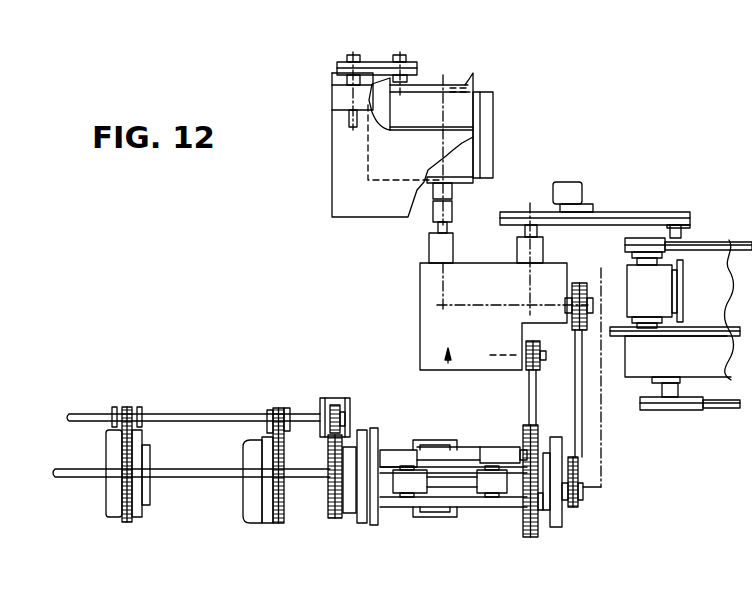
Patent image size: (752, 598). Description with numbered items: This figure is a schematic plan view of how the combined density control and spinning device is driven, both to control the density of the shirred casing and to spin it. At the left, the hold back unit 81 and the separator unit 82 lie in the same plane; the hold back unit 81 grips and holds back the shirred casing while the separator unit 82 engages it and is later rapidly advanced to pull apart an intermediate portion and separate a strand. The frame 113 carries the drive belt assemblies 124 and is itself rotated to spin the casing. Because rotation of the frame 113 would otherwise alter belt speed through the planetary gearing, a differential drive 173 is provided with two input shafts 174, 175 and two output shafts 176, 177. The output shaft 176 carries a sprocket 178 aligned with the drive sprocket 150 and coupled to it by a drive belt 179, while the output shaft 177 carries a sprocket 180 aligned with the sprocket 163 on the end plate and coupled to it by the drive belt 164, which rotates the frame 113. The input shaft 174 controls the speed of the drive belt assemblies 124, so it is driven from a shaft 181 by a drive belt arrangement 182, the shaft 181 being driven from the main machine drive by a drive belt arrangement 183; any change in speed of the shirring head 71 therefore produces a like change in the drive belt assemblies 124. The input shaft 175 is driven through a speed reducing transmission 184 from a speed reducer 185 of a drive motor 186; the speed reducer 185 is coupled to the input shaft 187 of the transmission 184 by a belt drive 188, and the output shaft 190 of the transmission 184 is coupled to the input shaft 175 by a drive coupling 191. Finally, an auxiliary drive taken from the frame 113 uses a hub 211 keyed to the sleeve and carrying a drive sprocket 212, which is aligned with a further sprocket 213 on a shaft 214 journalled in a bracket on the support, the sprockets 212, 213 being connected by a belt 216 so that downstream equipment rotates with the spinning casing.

The shirring head 71 is at (655, 340).
The hold back unit 81 is at (255, 529).
The separator unit 82 is at (131, 532).
The frame 113 is at (392, 517).
The drive belt assembly 124 is at (463, 488).
The drive sprocket 150 is at (583, 507).
The sprocket 163 is at (528, 539).
The drive belt 164 is at (527, 403).
The differential drive 173 is at (447, 364).
The input shaft 174 is at (537, 230).
The input shaft 175 is at (430, 230).
The output shaft 176 is at (593, 297).
The output shaft 177 is at (547, 355).
The sprocket 178 is at (579, 283).
The drive belt 179 is at (583, 435).
The sprocket 180 is at (522, 377).
The shaft 181 is at (683, 235).
The drive belt arrangement 182 is at (632, 212).
The drive belt arrangement 183 is at (725, 407).
The speed reducing transmission 184 is at (474, 150).
The speed reducer 185 is at (332, 97).
The drive motor 186 is at (428, 125).
The input shaft 187 is at (417, 78).
The belt drive 188 is at (380, 63).
The output shaft 190 is at (453, 200).
The drive coupling 191 is at (431, 208).
The hub 211 is at (327, 495).
The drive sprocket 212 is at (333, 520).
The sprocket 213 is at (333, 403).
The shaft 214 is at (184, 413).
The belt 216 is at (343, 522).